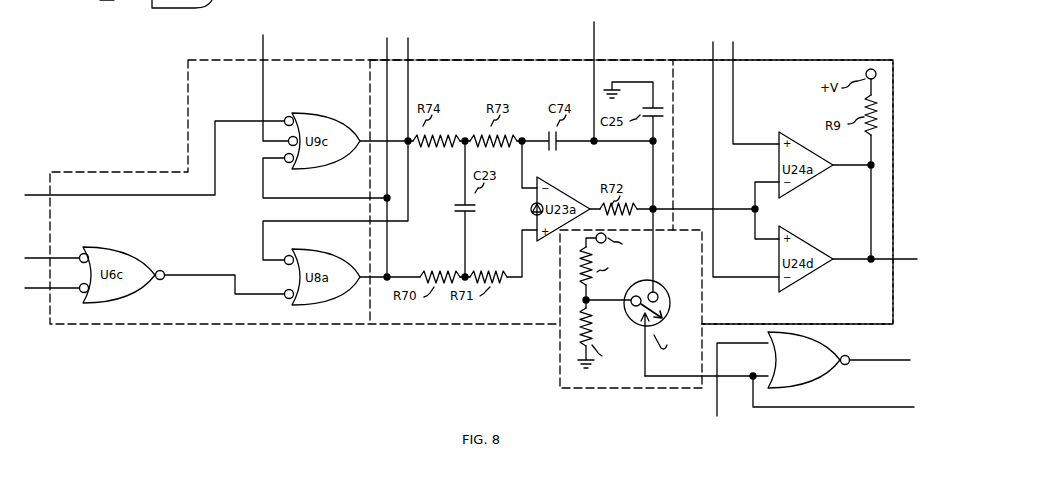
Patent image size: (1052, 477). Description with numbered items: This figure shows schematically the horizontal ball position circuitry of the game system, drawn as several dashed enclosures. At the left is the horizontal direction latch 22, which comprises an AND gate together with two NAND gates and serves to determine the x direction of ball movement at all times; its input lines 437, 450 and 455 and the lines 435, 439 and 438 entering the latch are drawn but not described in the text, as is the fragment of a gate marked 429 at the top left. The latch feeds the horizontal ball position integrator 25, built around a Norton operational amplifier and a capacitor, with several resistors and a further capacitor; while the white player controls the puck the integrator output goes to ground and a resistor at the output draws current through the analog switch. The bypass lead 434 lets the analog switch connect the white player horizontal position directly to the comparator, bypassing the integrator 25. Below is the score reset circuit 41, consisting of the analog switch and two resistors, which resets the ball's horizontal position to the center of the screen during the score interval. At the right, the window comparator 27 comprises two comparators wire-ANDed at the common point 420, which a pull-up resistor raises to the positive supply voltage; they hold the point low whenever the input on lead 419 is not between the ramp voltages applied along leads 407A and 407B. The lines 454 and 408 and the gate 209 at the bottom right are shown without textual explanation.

The gate 429 is at (103, 8).
The horizontal direction latch 22 is at (332, 57).
The horizontal ball position integrator 25 is at (516, 58).
The window comparator 27 is at (830, 60).
The score reset circuit 41 is at (558, 372).
The input line 437 is at (30, 188).
The input line 450 is at (33, 256).
The input line 455 is at (38, 289).
The input line 435 is at (269, 38).
The line 439 is at (395, 42).
The line 438 is at (415, 42).
The bypass lead 434 is at (598, 30).
The lead 407B is at (720, 40).
The lead 407A is at (747, 44).
The lead 419 is at (722, 206).
The common point 420 is at (902, 254).
The line 454 is at (712, 402).
The gate 209 is at (828, 369).
The line 408 is at (832, 408).